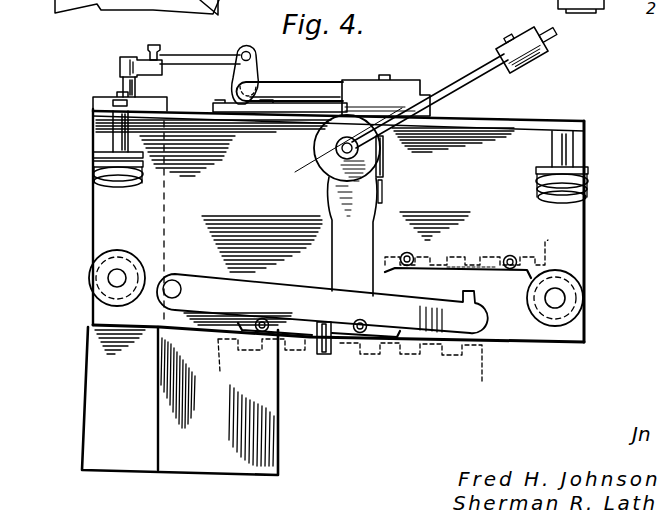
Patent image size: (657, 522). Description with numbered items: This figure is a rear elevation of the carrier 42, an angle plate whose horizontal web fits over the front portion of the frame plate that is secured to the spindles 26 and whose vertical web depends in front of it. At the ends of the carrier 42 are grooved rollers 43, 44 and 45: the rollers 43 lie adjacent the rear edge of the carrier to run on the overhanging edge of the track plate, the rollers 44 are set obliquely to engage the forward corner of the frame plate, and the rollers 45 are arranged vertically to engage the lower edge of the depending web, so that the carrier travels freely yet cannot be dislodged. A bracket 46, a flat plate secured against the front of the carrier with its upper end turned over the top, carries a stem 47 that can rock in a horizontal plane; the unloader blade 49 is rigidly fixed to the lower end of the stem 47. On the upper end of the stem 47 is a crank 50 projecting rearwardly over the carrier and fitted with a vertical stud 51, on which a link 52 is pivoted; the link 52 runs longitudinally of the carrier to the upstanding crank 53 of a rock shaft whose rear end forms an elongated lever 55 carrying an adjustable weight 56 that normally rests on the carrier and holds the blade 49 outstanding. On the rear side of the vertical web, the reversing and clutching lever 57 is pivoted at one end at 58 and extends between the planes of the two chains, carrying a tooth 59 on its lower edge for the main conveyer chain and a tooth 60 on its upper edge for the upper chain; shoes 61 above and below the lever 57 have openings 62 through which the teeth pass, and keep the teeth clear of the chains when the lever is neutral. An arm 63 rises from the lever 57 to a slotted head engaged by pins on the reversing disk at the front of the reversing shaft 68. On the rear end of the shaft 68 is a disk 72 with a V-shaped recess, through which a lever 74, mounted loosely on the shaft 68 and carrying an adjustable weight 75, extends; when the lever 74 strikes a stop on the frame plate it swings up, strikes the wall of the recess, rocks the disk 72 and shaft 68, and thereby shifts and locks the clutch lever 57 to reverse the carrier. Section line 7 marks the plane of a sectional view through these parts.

The section line 7- 7 is at (348, 133).
The spindles 26 is at (600, 9).
The carrier 42 is at (354, 231).
The grooved rollers 43 is at (98, 150).
The grooved rollers 44 is at (92, 182).
The grooved rollers 45 is at (98, 278).
The bracket 46 is at (95, 98).
The stem 47 is at (119, 86).
The unloader blade 49 is at (222, 460).
The crank 50 is at (143, 77).
The stud 51 is at (156, 44).
The link 52 is at (216, 50).
The crank 53 is at (258, 70).
The crank arm or lever 55 is at (308, 93).
The weight 56 is at (413, 87).
The reversing and clutching lever 57 is at (233, 292).
The pivot 58 is at (172, 282).
The tooth 59 is at (323, 354).
The tooth 60 is at (477, 296).
The shoes 61 is at (436, 262).
The openings 62 is at (472, 267).
The arm 63 is at (362, 228).
The reversing shaft 68 is at (383, 160).
The disk 72 is at (316, 142).
The lever 74 is at (482, 77).
The adjustable weight 75 is at (537, 57).